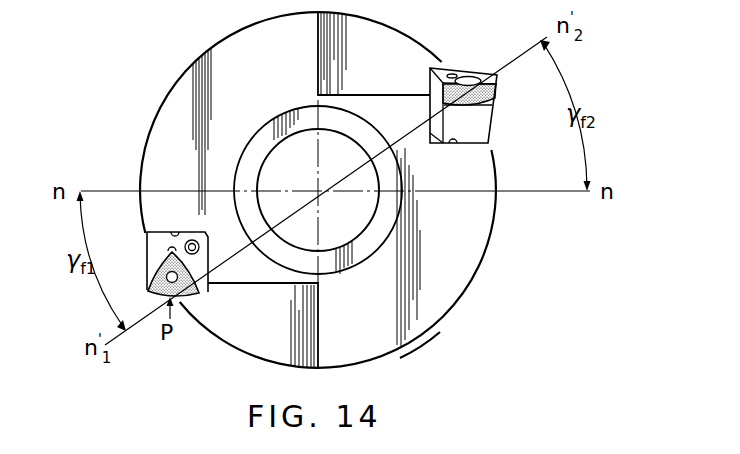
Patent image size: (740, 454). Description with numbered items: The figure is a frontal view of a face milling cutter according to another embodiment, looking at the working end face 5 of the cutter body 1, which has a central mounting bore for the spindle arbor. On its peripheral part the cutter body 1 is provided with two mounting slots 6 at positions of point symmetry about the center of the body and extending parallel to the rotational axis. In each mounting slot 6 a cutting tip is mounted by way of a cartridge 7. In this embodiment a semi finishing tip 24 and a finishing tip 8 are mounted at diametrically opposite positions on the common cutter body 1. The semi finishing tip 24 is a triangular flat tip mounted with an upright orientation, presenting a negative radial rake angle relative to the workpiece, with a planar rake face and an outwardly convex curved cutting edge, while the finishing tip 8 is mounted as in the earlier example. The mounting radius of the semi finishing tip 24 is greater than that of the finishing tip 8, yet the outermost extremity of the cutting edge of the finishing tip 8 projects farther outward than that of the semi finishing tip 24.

The cutter body 1 is at (235, 32).
The working end face 5 is at (422, 320).
The mounting slot 6 is at (455, 141).
The cartridge 7 is at (483, 127).
The finishing tip 8 is at (155, 278).
The semi finishing tip 24 is at (497, 90).